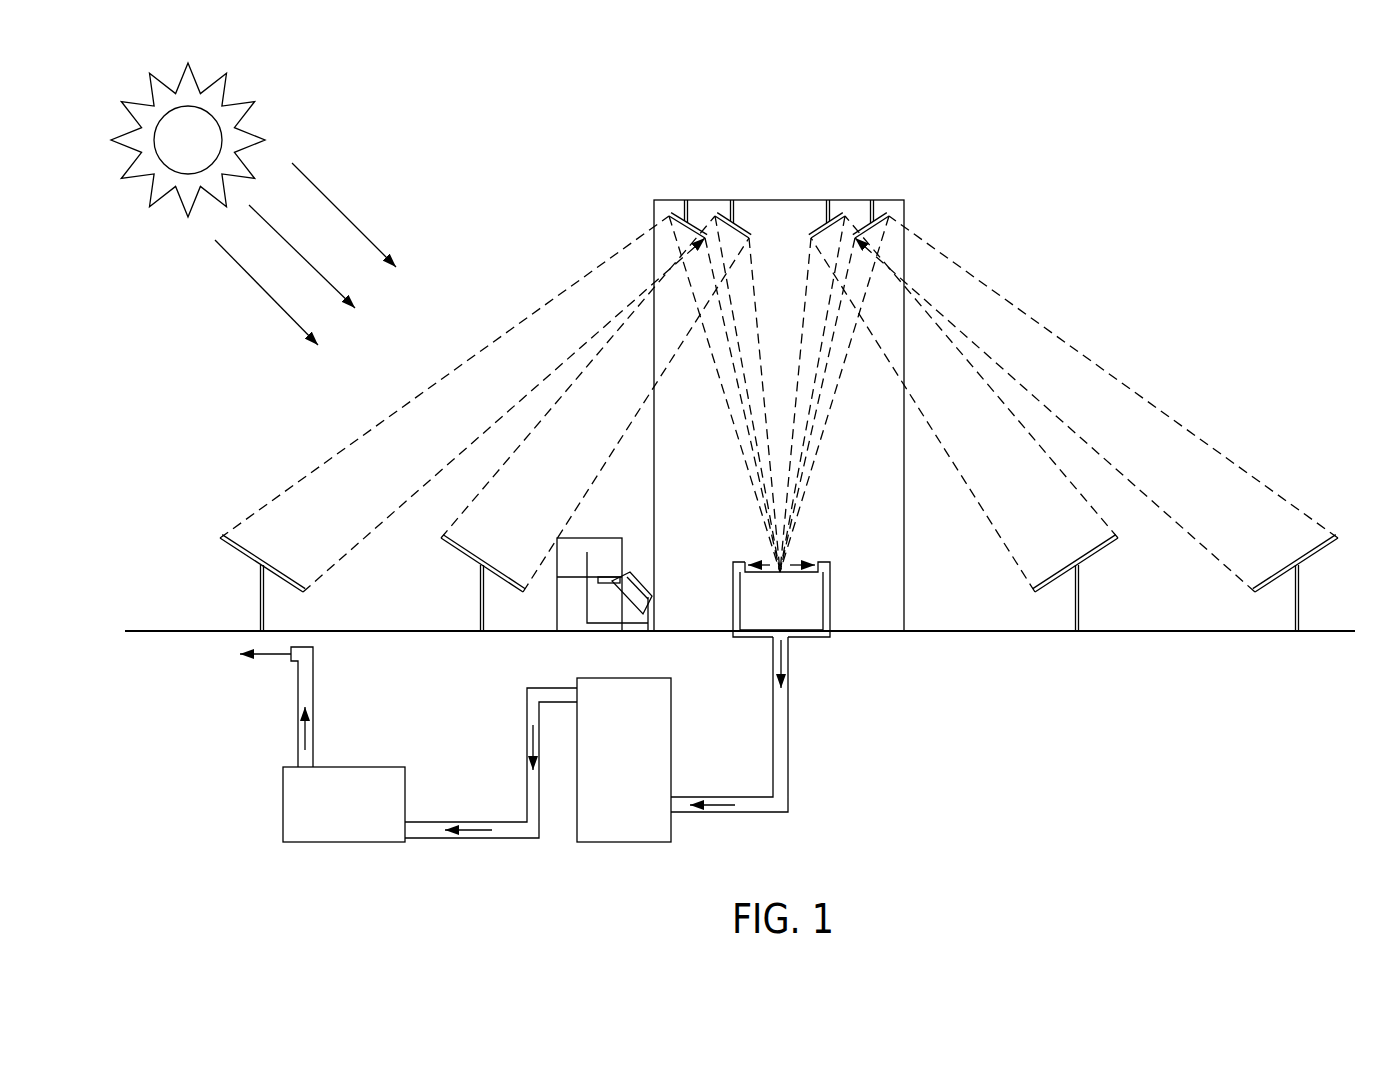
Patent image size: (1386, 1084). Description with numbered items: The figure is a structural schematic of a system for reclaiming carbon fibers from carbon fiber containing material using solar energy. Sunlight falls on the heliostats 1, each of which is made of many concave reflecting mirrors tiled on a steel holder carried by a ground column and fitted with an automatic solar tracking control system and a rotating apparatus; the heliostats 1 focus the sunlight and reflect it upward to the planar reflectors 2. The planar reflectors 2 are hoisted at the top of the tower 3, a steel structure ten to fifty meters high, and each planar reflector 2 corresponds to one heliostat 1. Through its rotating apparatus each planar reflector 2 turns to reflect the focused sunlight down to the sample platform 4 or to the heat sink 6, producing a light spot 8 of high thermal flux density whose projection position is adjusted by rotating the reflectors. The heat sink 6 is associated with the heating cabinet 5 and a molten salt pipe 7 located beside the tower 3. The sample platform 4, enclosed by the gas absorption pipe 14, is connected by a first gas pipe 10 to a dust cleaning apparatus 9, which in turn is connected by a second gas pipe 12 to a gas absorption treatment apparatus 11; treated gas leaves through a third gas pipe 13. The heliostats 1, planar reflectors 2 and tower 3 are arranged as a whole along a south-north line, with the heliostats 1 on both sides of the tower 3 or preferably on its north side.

The heliostat 1 is at (224, 535).
The planar reflector 2 is at (817, 235).
The tower 3 is at (904, 200).
The sample platform 4 is at (770, 618).
The heating cabinet 5 is at (606, 540).
The heat sink 6 is at (640, 580).
The molten salt pipe 7 is at (609, 583).
The light spot 8 is at (778, 574).
The dust cleaning apparatus 9 is at (611, 775).
The first gas pipe 10 is at (788, 728).
The gas absorption treatment apparatus 11 is at (333, 819).
The second gas pipe 12 is at (527, 788).
The third gas pipe 13 is at (298, 678).
The gas absorption pipe 14 is at (830, 596).